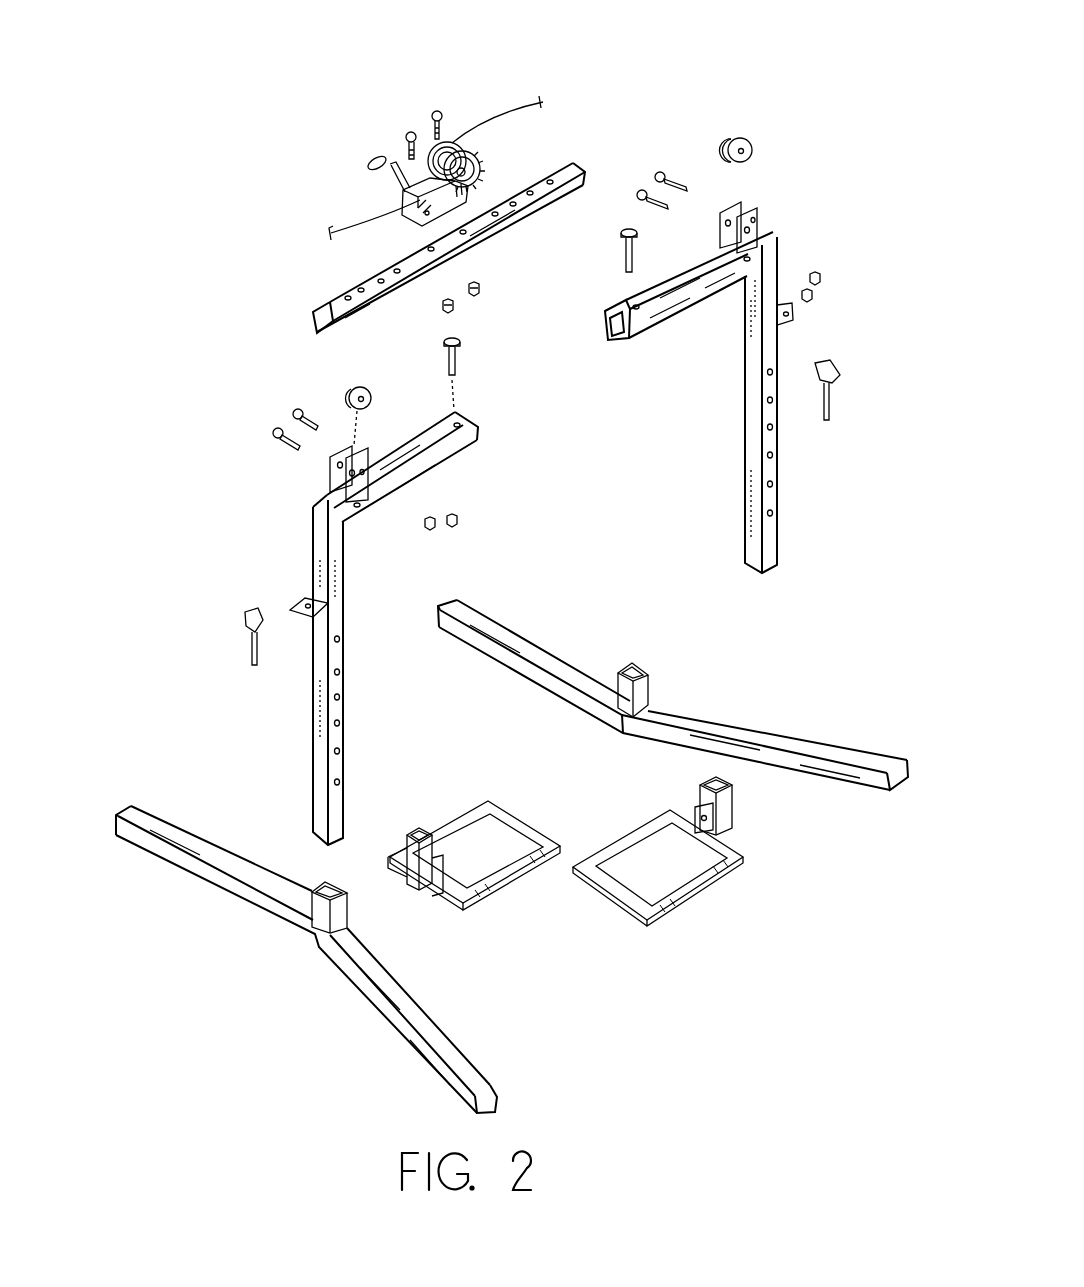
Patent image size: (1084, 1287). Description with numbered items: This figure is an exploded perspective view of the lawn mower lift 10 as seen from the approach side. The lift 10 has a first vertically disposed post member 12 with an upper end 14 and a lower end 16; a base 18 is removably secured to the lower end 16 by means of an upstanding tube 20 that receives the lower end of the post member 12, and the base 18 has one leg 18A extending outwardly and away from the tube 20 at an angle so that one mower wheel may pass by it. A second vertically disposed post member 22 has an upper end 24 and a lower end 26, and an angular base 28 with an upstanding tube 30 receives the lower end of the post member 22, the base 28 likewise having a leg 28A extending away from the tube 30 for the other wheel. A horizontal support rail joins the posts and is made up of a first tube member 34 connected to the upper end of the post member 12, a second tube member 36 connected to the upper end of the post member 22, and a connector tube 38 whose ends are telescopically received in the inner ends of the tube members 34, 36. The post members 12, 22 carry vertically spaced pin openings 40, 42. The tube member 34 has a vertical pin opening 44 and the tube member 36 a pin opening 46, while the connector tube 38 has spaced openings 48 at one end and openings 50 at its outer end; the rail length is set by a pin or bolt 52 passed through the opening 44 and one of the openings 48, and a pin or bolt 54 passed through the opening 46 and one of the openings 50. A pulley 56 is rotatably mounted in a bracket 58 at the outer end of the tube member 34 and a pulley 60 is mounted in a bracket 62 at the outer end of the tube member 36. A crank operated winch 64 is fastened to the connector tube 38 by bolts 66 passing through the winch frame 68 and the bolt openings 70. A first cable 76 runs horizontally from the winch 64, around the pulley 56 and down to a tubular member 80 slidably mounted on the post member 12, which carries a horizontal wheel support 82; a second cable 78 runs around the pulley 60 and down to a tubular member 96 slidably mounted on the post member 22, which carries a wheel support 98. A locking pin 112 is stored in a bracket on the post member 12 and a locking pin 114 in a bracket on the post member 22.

The lawn mower lift 10 is at (670, 147).
The first post member 12 is at (378, 623).
The upper end 14 is at (313, 517).
The lower end 16 is at (330, 848).
The base 18 is at (358, 959).
The leg 18A is at (480, 1062).
The upstanding tube 20 is at (347, 905).
The second post member 22 is at (737, 404).
The upper end 24 is at (778, 236).
The lower end 26 is at (762, 578).
The angular base 28 is at (673, 695).
The leg 28A is at (848, 755).
The upstanding tube 30 is at (655, 680).
The first tube member 34 is at (443, 462).
The second tube member 36 is at (700, 318).
The connector tube 38 is at (502, 232).
The pin openings 40 is at (340, 750).
The pin openings 42 is at (773, 400).
The pin opening 44 is at (465, 412).
The pin opening 46 is at (640, 343).
The pin openings 48 is at (381, 284).
The pin openings 50 is at (530, 193).
The pin or bolt 52 is at (460, 345).
The pin or bolt 54 is at (620, 247).
The pulley 56 is at (348, 390).
The pulley bracket 58 is at (330, 478).
The pulley 60 is at (745, 138).
The bracket 62 is at (750, 207).
The crank operated winch 64 is at (456, 133).
The bolts 66 is at (407, 130).
The frame 68 is at (410, 217).
The bolt openings 70 is at (464, 236).
The first cable 76 is at (355, 220).
The second cable 78 is at (520, 112).
The tubular member 80 is at (420, 827).
The wheel support 82 is at (460, 797).
The tubular member 96 is at (732, 820).
The wheel support 98 is at (618, 815).
The locking pin 112 is at (248, 650).
The locking pin 114 is at (840, 380).